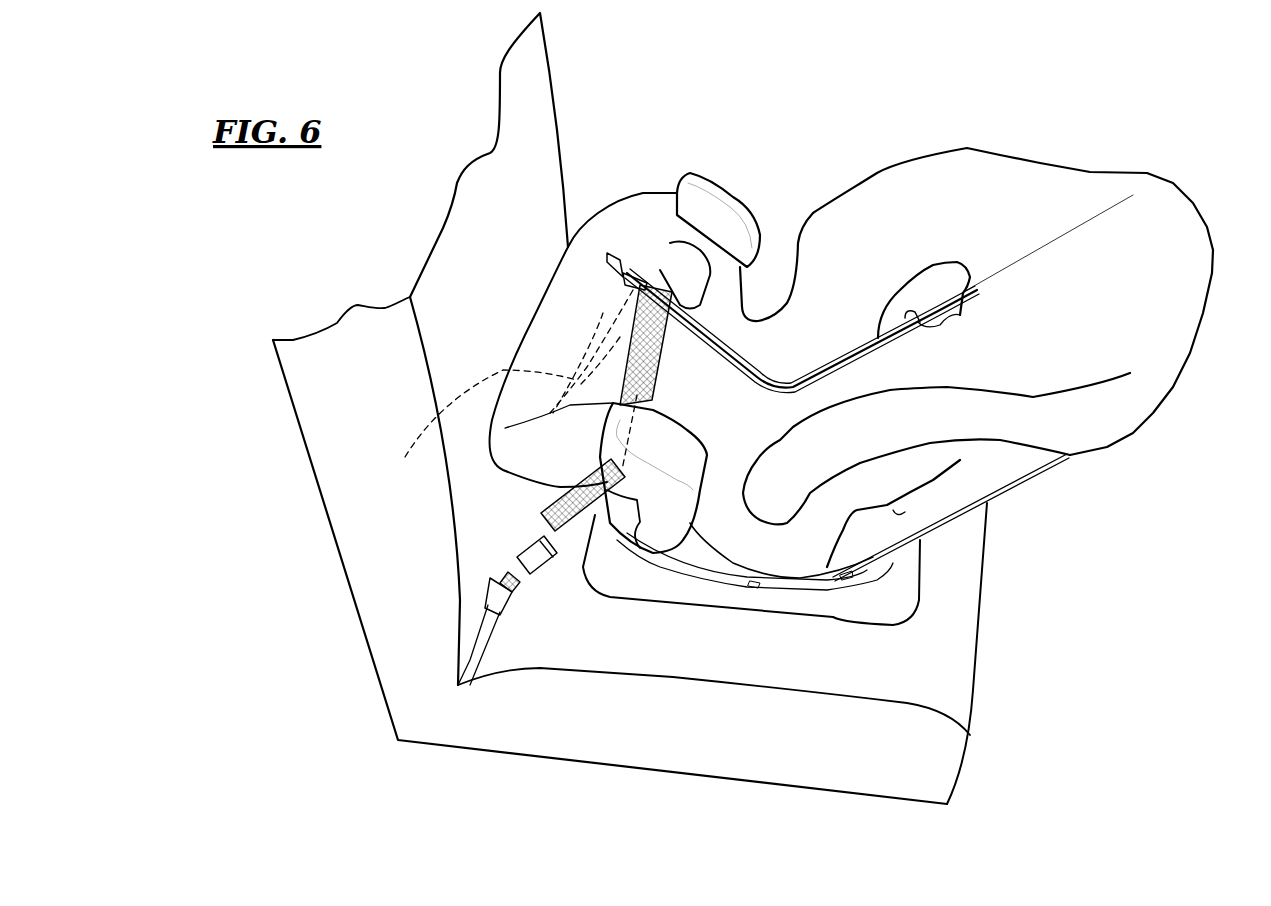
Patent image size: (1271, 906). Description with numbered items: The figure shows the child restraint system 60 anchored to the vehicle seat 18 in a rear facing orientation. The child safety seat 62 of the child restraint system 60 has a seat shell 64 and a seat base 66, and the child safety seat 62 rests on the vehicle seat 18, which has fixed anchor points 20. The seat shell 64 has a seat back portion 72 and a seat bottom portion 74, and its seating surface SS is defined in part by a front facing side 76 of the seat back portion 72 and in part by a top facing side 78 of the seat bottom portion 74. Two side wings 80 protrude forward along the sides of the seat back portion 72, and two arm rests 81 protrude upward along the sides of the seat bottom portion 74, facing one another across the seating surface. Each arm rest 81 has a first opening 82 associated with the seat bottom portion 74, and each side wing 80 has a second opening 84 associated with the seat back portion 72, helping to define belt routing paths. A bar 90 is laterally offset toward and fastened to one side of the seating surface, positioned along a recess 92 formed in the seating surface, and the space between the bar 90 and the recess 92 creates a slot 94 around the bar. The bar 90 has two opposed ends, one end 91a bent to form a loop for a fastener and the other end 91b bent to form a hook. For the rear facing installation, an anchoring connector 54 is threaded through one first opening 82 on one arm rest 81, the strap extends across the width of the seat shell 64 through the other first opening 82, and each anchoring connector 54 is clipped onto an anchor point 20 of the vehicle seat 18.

The vehicle seat 18 is at (577, 647).
The anchor point 20 is at (483, 618).
The anchoring connector 54 is at (500, 577).
The child restraint system 60 is at (808, 379).
The child safety seat 62 is at (773, 651).
The seat shell 64 is at (1038, 478).
The seat base 66 is at (877, 597).
The seat back portion 72 is at (1170, 228).
The seat bottom portion 74 is at (560, 305).
The front facing side 76 is at (1088, 250).
The top facing side 78 is at (748, 358).
The side wing 80 is at (925, 193).
The arm rest 81 is at (662, 208).
The first opening 82 is at (677, 268).
The second opening 84 is at (918, 293).
The bar 90 is at (780, 385).
The one end 91a is at (627, 280).
The other end 91b is at (920, 320).
The recess 92 is at (792, 390).
The slot 94 is at (783, 383).